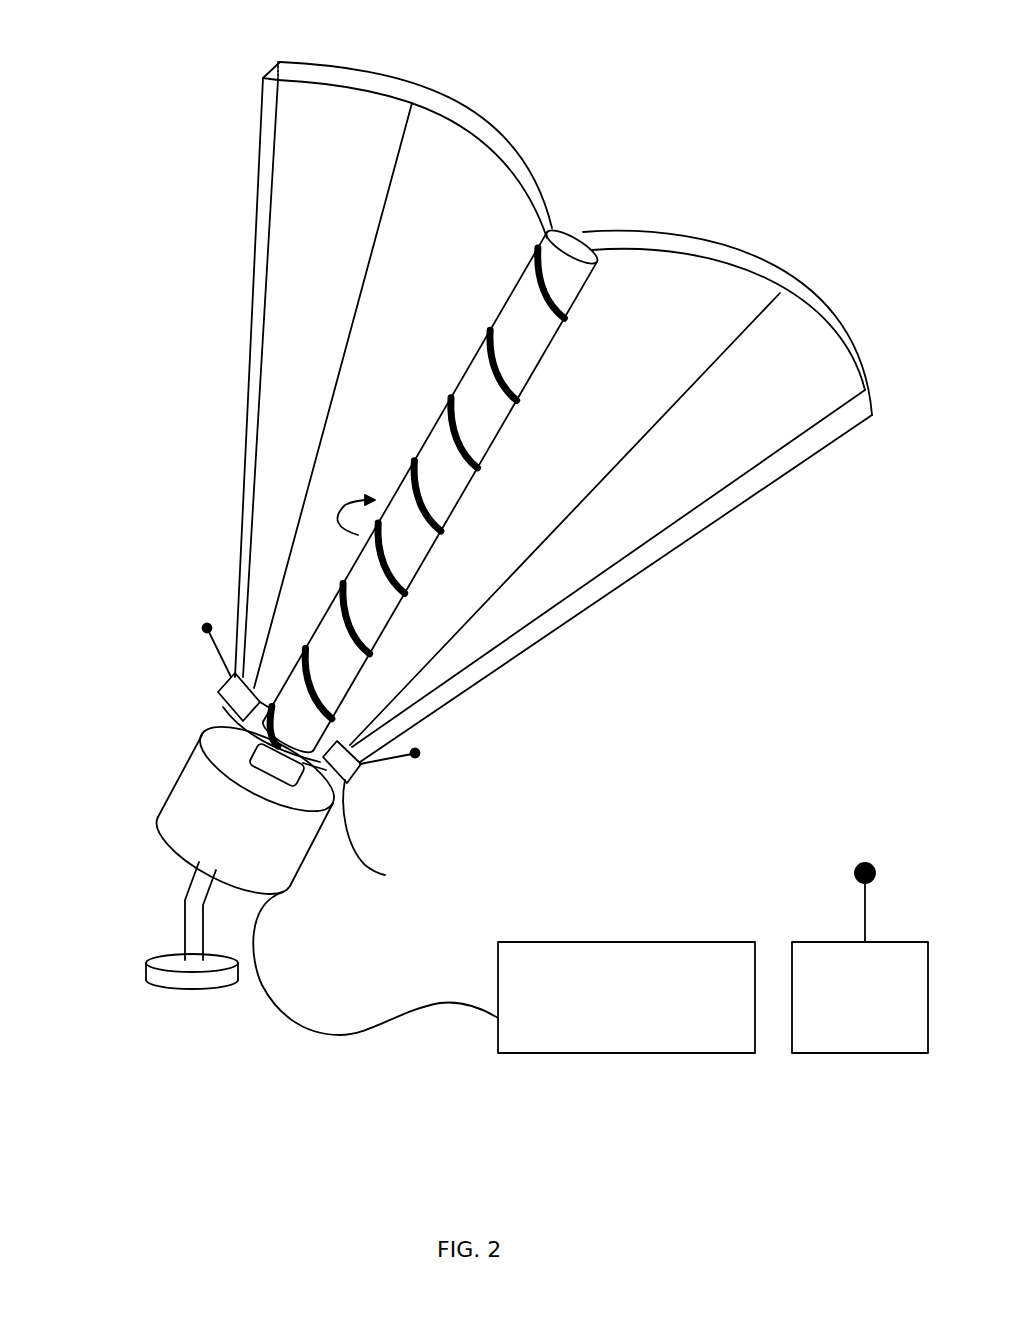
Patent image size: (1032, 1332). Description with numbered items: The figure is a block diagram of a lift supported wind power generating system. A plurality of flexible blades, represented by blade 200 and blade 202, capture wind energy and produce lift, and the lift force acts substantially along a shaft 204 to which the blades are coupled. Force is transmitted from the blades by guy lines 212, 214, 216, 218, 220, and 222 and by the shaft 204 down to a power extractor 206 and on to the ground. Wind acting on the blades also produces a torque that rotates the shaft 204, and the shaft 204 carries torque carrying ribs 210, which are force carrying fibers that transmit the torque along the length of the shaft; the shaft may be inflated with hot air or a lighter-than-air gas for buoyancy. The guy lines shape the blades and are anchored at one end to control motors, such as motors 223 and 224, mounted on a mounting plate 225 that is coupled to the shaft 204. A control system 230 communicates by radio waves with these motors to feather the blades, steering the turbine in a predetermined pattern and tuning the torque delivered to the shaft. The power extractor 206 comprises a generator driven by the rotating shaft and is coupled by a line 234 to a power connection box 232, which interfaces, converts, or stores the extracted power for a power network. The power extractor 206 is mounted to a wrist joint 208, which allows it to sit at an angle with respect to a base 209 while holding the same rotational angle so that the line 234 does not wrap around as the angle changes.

The blade 200 is at (366, 76).
The blade 202 is at (750, 267).
The shaft 204 is at (433, 437).
The power extractor 206 is at (163, 792).
The wrist joint 208 is at (187, 893).
The base 209 is at (145, 978).
The torque carrying ribs 210 is at (520, 395).
The guy line 212 is at (694, 534).
The guy line 214 is at (631, 562).
The guy line 216 is at (655, 425).
The guy line 218 is at (382, 207).
The guy line 220 is at (277, 130).
The guy line 222 is at (253, 267).
The motor 223 is at (217, 690).
The motor 224 is at (350, 776).
The mounting plate 225 is at (386, 833).
The control system 230 is at (818, 960).
The power connection box 232 is at (582, 942).
The line 234 is at (403, 1013).